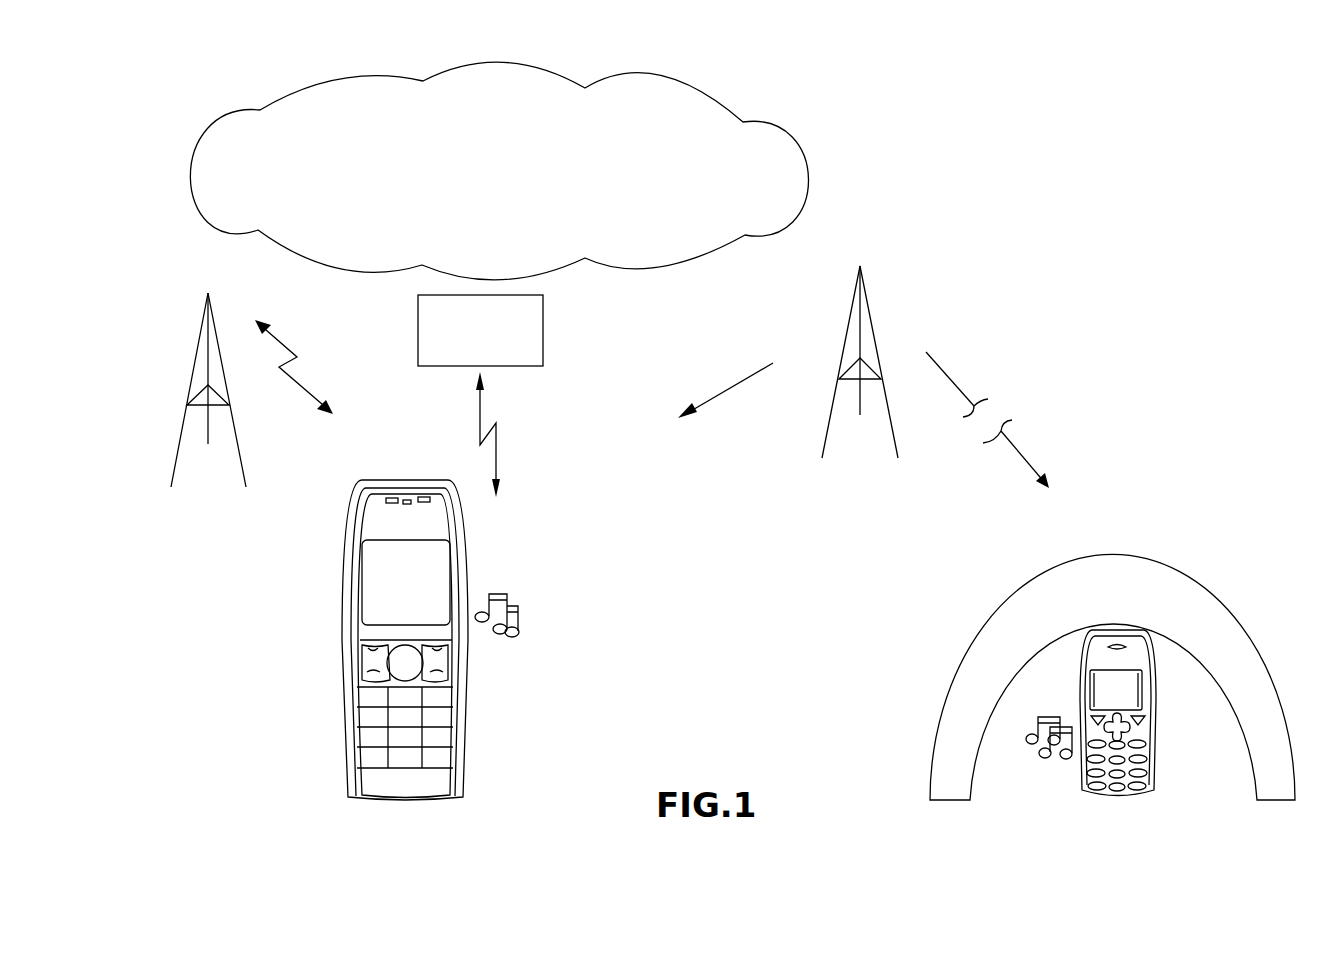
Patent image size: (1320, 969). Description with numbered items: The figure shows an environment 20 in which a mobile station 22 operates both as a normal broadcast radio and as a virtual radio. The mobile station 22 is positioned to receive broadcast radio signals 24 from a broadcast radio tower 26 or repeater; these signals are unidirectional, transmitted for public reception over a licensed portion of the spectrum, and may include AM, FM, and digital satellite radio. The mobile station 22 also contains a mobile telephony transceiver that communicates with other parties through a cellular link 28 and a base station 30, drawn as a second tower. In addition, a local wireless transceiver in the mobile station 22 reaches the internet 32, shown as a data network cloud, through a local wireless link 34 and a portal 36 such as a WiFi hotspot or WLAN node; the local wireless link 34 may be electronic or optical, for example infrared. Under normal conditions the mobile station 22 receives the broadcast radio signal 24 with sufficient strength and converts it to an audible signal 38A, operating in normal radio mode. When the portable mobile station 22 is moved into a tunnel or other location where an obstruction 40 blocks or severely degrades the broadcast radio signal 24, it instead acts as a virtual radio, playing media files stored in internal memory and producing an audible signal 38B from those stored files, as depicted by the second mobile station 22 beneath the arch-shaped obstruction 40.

The environment 20 is at (941, 138).
The mobile station 22 is at (344, 695).
The broadcast radio signals 24 is at (721, 389).
The broadcast radio tower 26 is at (826, 446).
The cellular link 28 is at (293, 356).
The base station 30 is at (174, 468).
The internet 32 is at (235, 124).
The local wireless link 34 is at (500, 445).
The portal 36 is at (545, 318).
The audible signal 38A is at (522, 614).
The audible signal 38B is at (1044, 760).
The obstruction 40 is at (951, 701).